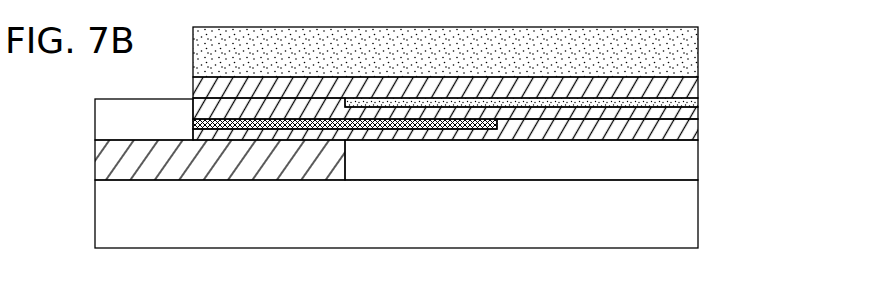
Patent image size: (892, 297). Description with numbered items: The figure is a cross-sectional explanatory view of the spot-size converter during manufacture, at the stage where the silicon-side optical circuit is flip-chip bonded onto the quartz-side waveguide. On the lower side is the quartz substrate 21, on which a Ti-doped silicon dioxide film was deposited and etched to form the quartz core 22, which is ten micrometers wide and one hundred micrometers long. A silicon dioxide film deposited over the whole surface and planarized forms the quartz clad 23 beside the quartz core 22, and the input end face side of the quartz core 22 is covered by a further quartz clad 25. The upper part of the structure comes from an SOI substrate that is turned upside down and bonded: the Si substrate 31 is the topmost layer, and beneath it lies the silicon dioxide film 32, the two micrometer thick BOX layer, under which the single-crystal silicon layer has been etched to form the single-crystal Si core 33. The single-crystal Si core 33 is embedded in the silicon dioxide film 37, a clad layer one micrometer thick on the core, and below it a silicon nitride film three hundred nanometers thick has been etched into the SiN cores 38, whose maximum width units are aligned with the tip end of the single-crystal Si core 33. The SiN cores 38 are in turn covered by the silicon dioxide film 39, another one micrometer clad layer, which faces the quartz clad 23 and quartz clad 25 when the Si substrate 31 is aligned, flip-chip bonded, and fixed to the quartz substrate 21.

The quartz substrate 21 is at (688, 208).
The quartz core 22 is at (95, 164).
The quartz clad 23 is at (688, 168).
The quartz clad 25 is at (103, 106).
The Si substrate 31 is at (698, 35).
The SiO2 film 32 is at (698, 86).
The single-crystal Si core 33 is at (698, 103).
The SiO2 film 37 is at (698, 110).
The SiN core 38 is at (193, 120).
The SiO2 film 39 is at (698, 133).